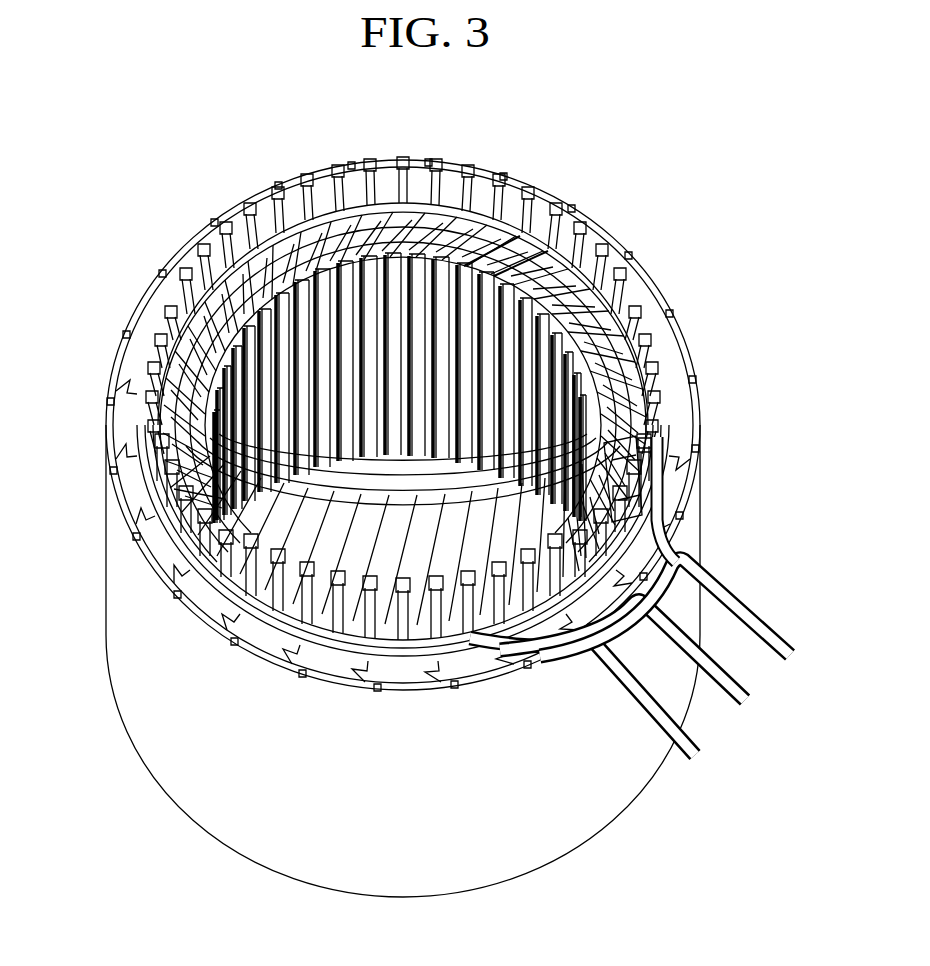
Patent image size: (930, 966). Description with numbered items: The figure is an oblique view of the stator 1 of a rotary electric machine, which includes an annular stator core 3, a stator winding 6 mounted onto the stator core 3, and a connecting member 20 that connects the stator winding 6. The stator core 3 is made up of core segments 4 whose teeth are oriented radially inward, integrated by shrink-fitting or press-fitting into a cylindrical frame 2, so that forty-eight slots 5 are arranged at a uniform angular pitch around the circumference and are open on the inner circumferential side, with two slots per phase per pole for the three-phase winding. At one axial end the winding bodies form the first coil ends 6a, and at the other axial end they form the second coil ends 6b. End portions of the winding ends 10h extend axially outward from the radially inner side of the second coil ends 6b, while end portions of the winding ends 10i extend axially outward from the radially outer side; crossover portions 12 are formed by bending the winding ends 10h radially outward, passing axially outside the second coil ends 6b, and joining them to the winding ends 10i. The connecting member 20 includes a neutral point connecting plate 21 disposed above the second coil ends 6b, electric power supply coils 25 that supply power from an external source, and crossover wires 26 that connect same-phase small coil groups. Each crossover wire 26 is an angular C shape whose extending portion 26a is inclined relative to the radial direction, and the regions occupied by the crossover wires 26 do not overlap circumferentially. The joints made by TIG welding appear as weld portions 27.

The stator 1 is at (84, 107).
The cylindrical frame 2 is at (118, 357).
The stator core 3 is at (130, 396).
The core segment 4 is at (120, 438).
The slots 5 is at (232, 599).
The stator winding 6 is at (598, 236).
The first coil ends 6a is at (420, 480).
The second coil ends 6b is at (433, 192).
The winding ends 10h is at (500, 242).
The winding ends 10i is at (538, 202).
The crossover portions 12 is at (446, 196).
The connecting member 20 is at (594, 606).
The neutral point connecting plate 21 is at (606, 481).
The electric power supply coils 25 is at (672, 449).
The crossover wires 26 is at (660, 462).
The extending portion 26a is at (393, 587).
The weld portions 27 is at (181, 268).